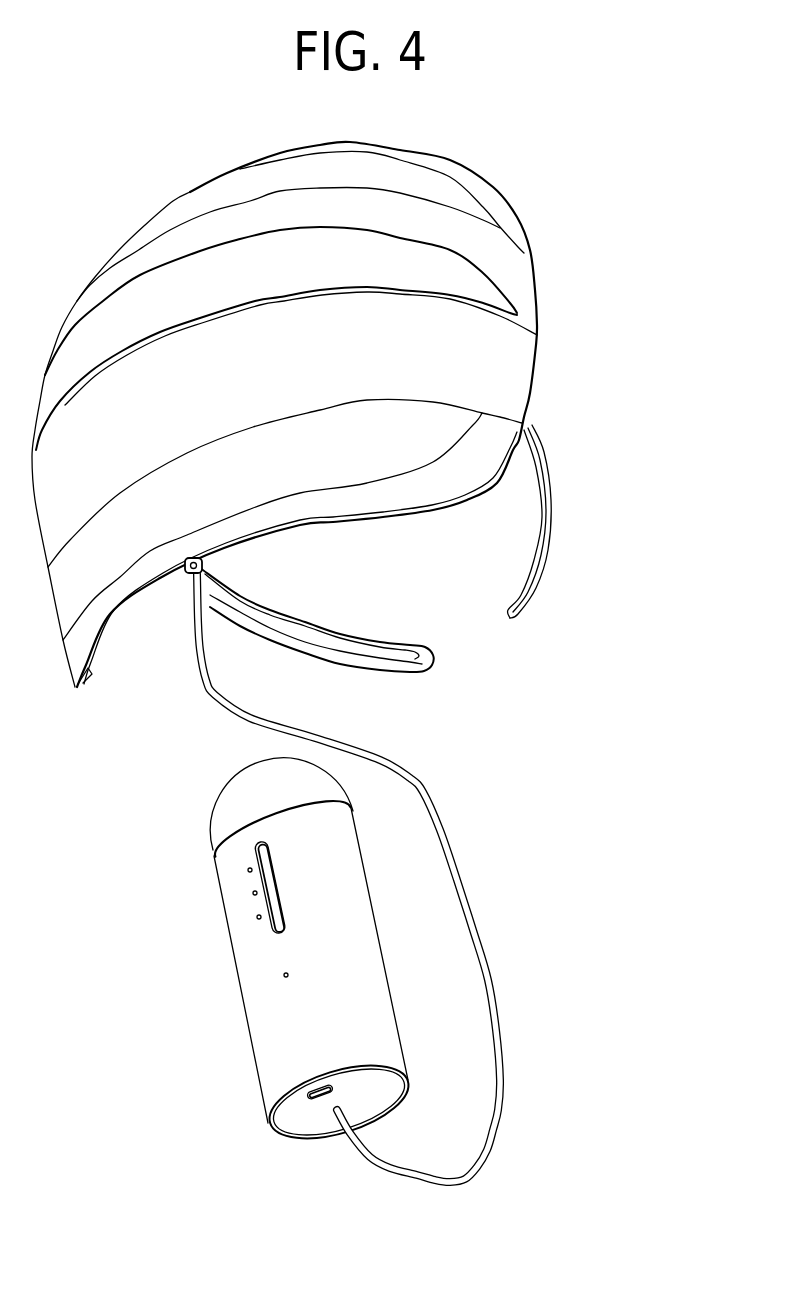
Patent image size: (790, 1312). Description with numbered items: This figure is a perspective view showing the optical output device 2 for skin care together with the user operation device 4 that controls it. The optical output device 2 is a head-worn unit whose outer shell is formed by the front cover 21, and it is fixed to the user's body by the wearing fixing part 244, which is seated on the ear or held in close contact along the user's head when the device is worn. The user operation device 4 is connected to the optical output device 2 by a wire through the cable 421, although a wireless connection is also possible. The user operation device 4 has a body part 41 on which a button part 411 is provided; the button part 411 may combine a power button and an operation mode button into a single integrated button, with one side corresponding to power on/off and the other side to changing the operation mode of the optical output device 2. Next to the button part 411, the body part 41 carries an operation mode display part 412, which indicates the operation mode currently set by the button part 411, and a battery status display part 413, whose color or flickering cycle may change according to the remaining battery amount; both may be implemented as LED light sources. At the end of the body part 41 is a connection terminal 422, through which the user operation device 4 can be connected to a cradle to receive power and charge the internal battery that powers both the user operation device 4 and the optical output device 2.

The optical output device 2 is at (323, 387).
The front cover 21 is at (522, 253).
The wearing fixing part 244 is at (541, 452).
The user operation device 4 is at (335, 878).
The body part 41 is at (298, 955).
The button part 411 is at (273, 868).
The operation mode display part 412 is at (248, 872).
The battery status display part 413 is at (284, 977).
The cable 421 is at (472, 935).
The connection terminal 422 is at (312, 1100).